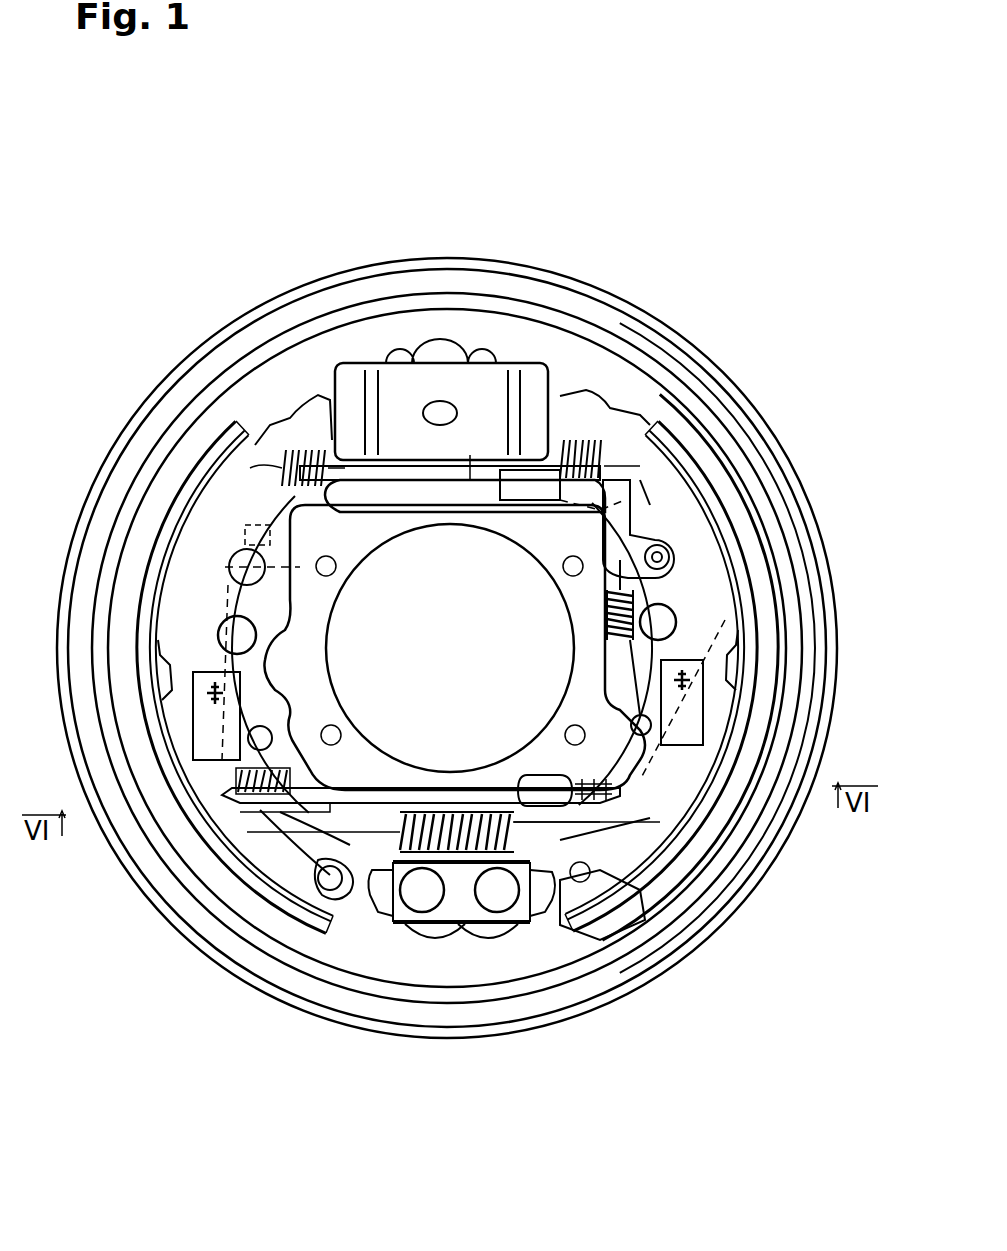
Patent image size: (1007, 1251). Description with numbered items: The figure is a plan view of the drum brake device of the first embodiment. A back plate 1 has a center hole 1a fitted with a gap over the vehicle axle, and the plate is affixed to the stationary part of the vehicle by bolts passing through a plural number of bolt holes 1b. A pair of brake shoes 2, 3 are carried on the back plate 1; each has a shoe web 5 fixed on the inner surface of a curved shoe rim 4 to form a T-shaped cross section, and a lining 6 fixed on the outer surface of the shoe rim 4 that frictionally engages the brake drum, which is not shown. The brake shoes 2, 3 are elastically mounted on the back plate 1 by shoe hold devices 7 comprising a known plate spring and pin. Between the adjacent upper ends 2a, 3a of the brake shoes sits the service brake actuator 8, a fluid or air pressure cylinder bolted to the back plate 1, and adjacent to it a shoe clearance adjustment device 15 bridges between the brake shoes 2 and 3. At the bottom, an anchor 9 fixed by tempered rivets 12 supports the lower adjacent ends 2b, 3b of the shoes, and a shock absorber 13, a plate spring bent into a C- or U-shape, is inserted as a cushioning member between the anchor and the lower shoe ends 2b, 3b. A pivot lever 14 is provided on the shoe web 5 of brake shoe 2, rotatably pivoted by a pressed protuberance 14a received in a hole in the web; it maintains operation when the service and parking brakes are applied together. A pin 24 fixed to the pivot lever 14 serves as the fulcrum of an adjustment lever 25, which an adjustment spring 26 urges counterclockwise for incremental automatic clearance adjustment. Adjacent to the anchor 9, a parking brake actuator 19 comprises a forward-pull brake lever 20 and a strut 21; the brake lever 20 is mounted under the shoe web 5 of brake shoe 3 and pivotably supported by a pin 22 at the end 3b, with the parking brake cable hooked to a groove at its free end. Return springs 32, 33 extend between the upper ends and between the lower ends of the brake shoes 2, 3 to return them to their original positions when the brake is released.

The back plate 1 is at (568, 284).
The center hole 1a is at (388, 543).
The bolt holes 1b is at (330, 573).
The brake shoe 2 is at (680, 432).
The adjacent end of brake shoe 2a is at (575, 410).
The adjacent end of brake shoe 2b is at (602, 944).
The brake shoe 3 is at (206, 449).
The adjacent end of brake shoe 3a is at (322, 405).
The other end of brake shoe 3b is at (332, 915).
The shoe rim 4 is at (182, 578).
The shoe web 5 is at (176, 612).
The lining 6 is at (152, 646).
The shoe hold device 7 is at (191, 692).
The service brake actuator 8 is at (401, 360).
The anchor 9 is at (470, 912).
The rivet 12 is at (420, 903).
The shock absorber 13 is at (440, 936).
The pivot lever 14 is at (602, 672).
The protuberance 14a is at (677, 622).
The shoe clearance adjustment device 15 is at (470, 466).
The parking brake actuator 19 is at (414, 683).
The brake lever 20 is at (282, 692).
The strut 21 is at (454, 790).
The pin 22 is at (326, 896).
The pin 24 is at (670, 556).
The adjustment lever 25 is at (655, 512).
The adjustment spring 26 is at (628, 600).
The return spring 32 is at (626, 440).
The return spring 33 is at (642, 930).